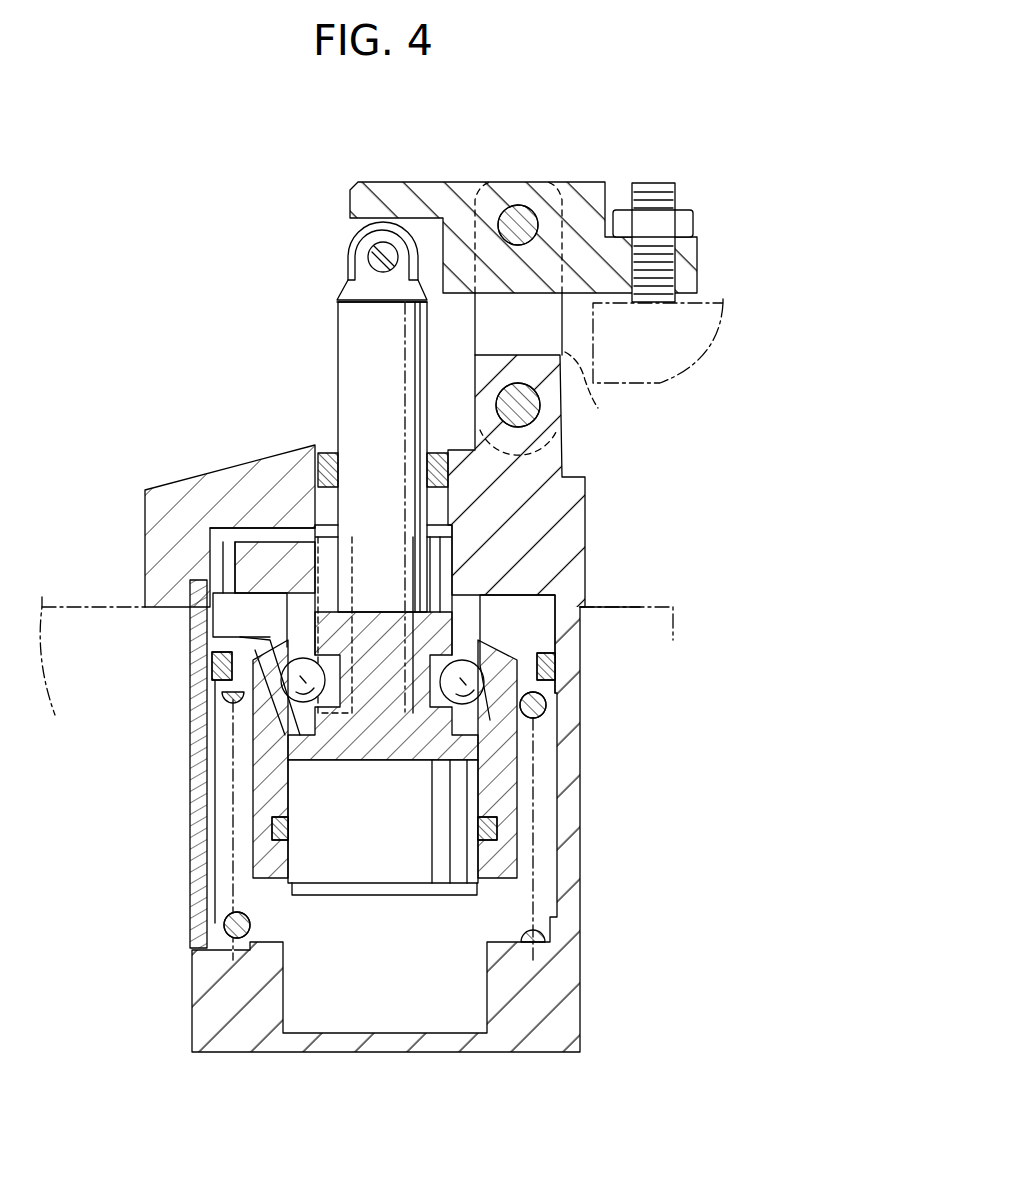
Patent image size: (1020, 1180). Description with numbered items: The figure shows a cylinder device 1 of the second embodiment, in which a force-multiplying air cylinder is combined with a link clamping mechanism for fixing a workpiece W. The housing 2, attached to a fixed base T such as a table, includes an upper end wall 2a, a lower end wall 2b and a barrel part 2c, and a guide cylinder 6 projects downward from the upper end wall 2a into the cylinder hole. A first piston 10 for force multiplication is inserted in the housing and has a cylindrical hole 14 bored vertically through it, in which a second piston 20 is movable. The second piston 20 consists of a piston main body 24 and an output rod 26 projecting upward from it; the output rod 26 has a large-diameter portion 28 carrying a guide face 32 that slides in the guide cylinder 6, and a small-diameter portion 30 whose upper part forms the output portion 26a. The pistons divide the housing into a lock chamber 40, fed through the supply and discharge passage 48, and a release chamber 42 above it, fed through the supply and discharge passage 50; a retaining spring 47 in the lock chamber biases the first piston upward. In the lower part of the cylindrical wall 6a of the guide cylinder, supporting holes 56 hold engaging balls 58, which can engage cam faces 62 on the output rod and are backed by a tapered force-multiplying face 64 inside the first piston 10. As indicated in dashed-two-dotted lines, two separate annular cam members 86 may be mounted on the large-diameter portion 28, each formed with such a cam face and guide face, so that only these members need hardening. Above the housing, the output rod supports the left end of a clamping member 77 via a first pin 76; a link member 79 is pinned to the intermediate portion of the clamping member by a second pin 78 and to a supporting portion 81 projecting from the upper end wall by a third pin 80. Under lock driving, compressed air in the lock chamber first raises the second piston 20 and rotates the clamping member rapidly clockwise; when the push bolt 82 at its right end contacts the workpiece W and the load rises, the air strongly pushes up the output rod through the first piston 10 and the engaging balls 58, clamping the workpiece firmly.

The cylinder device 1 is at (612, 500).
The housing 2 is at (592, 536).
The upper end wall 2a is at (248, 470).
The lower end wall 2b is at (242, 1040).
The barrel part 2c is at (588, 754).
The guide cylinder 6 is at (485, 622).
The cylindrical wall 6a is at (470, 595).
The first piston 10 is at (525, 815).
The cylindrical hole 14 is at (293, 815).
The second piston 20 is at (386, 905).
The piston main body 24 is at (414, 880).
The output rod 26 is at (336, 360).
The output portion 26a is at (372, 294).
The large-diameter portion 28 is at (476, 540).
The small-diameter portion 30 is at (350, 405).
The guide face 32 is at (333, 625).
The lock chamber 40 is at (345, 1035).
The release chamber 42 is at (262, 600).
The retaining spring 47 is at (552, 935).
The supply and discharge passage 48 is at (200, 752).
The supply and discharge passage 50 is at (216, 525).
The supporting holes 56 is at (304, 660).
The engaging balls 58 is at (282, 640).
The cam face 62 is at (360, 765).
The force-multiplying face 64 is at (305, 765).
The first pin 76 is at (370, 262).
The clamping member 77 is at (464, 186).
The second pin 78 is at (515, 213).
The link member 79 is at (598, 392).
The third pin 80 is at (548, 440).
The supporting portion 81 is at (572, 433).
The push bolt 82 is at (655, 183).
The cam members 86 is at (354, 540).
The fixed base T is at (640, 603).
The workpiece W is at (660, 380).